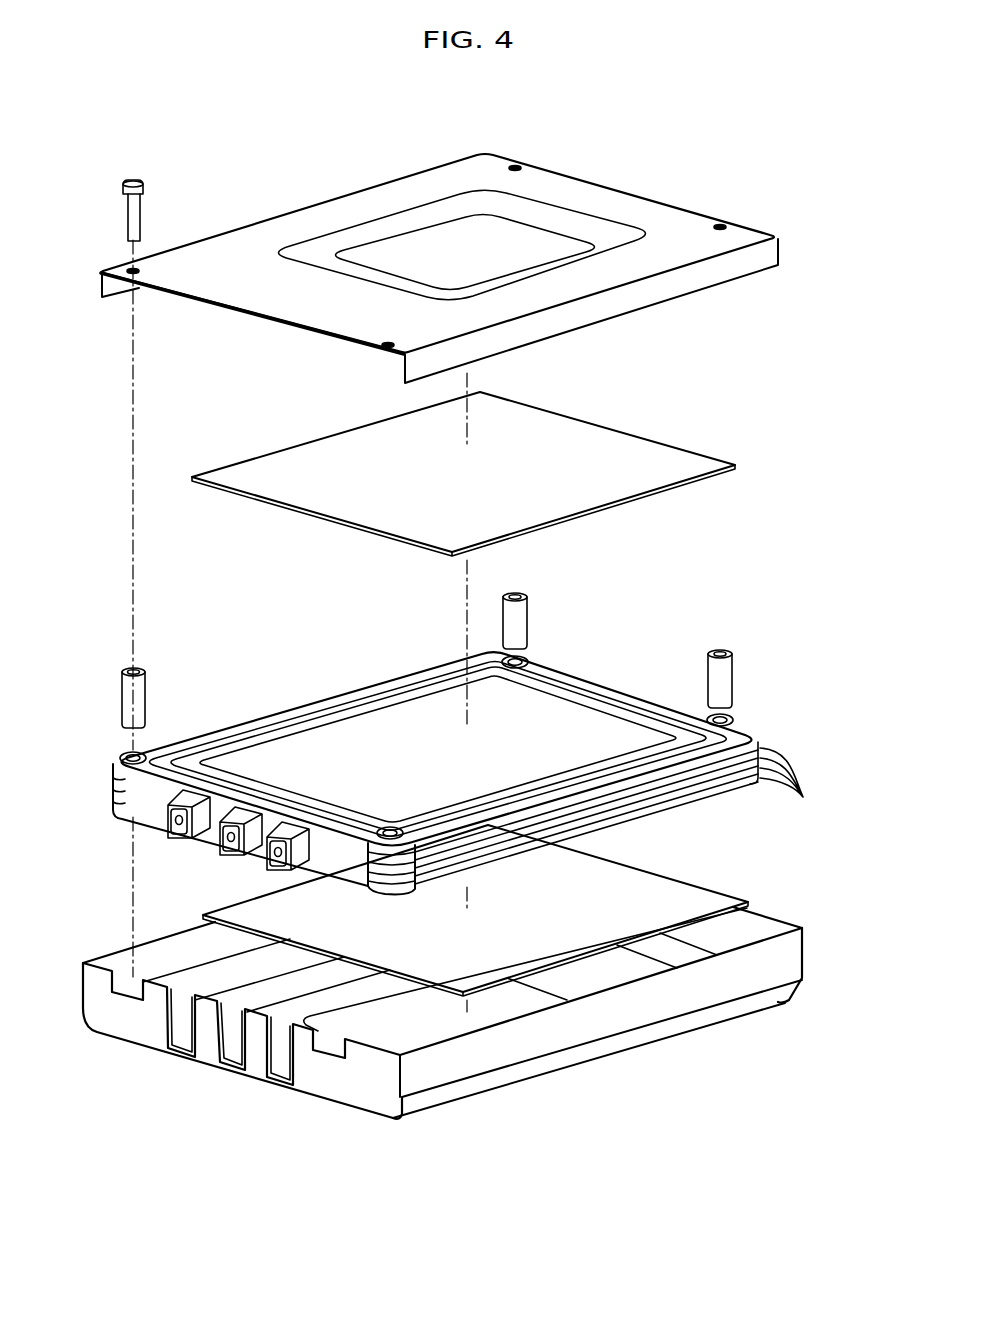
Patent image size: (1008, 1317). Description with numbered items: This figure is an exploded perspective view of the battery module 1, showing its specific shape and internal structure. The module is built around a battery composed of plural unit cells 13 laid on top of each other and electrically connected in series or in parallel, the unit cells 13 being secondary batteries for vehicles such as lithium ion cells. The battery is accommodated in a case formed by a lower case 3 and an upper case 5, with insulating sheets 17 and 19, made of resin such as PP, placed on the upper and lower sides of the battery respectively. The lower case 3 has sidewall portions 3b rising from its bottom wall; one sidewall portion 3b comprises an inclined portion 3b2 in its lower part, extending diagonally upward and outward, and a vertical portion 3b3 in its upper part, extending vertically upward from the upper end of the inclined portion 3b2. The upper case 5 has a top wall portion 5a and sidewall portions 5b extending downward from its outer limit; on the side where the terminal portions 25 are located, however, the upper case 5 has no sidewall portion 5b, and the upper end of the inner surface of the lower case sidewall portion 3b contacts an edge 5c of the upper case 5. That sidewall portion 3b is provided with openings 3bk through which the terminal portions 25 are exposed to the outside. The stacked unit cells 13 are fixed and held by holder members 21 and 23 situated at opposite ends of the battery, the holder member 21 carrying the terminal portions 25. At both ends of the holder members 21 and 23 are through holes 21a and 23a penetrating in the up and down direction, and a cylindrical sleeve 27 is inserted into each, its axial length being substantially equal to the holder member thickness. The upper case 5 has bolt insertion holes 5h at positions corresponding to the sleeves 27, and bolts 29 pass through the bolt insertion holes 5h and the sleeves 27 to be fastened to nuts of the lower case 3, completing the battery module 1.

The battery module 1 is at (815, 362).
The lower case 3 is at (685, 1022).
The sidewall portion 3b is at (565, 1145).
The inclined portion 3b2 is at (453, 1097).
The vertical portion 3b3 is at (540, 1052).
The opening 3bk is at (270, 1058).
The upper case 5 is at (612, 200).
The top wall portion 5a is at (393, 186).
The sidewall portion 5b is at (118, 292).
The edge 5c is at (257, 320).
The bolt insertion hole 5h is at (131, 270).
The unit cell 13 is at (822, 779).
The insulating sheet 17 is at (583, 427).
The insulating sheet 19 is at (682, 890).
The holder member 21 is at (469, 758).
The through hole 21a is at (128, 755).
The holder member 23 is at (472, 722).
The through hole 23a is at (517, 660).
The terminal portion 25 is at (180, 840).
The sleeve 27 is at (141, 683).
The bolt 29 is at (133, 178).